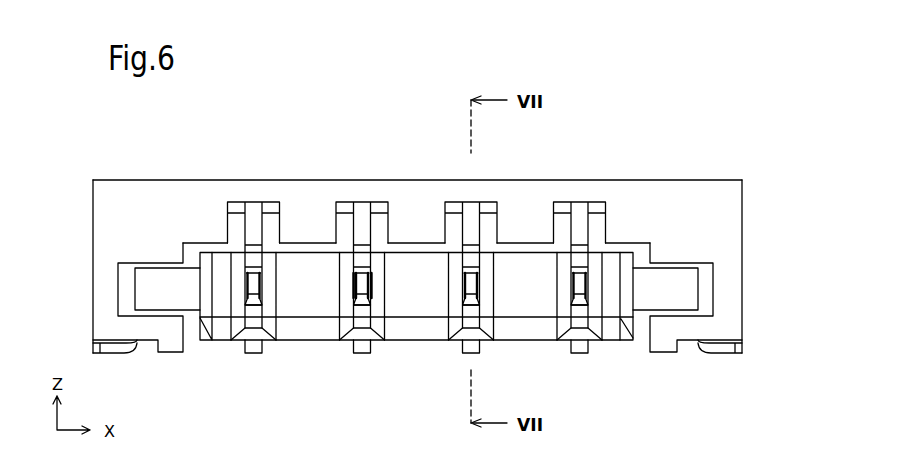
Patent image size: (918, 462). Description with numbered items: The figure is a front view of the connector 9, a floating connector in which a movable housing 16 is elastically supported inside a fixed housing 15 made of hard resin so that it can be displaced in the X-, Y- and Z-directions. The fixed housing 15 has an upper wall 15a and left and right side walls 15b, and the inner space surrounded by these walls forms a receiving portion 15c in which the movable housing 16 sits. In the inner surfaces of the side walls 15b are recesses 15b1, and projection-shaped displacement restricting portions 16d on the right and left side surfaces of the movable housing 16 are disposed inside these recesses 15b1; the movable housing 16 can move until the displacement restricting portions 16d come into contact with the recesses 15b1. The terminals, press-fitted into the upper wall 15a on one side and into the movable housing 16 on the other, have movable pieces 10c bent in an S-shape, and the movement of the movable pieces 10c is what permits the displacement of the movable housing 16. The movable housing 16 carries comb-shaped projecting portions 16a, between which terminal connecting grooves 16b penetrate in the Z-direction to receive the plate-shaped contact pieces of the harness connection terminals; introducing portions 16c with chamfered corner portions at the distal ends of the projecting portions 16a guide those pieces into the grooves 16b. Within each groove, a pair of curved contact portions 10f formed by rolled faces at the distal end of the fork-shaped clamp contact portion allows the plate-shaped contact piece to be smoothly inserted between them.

The connector 9 is at (633, 132).
The fixed housing 15 is at (718, 180).
The upper wall 15a is at (108, 180).
The side wall 15b is at (92, 223).
The recess 15b1 is at (125, 270).
The receiving portion 15c is at (192, 258).
The movable piece 10c is at (252, 213).
The curved contact portion 10f is at (341, 285).
The movable housing 16 is at (673, 270).
The projecting portion 16a is at (222, 310).
The terminal connecting groove 16b is at (262, 262).
The introducing portion 16c is at (362, 333).
The displacement restricting portion 16d is at (137, 302).